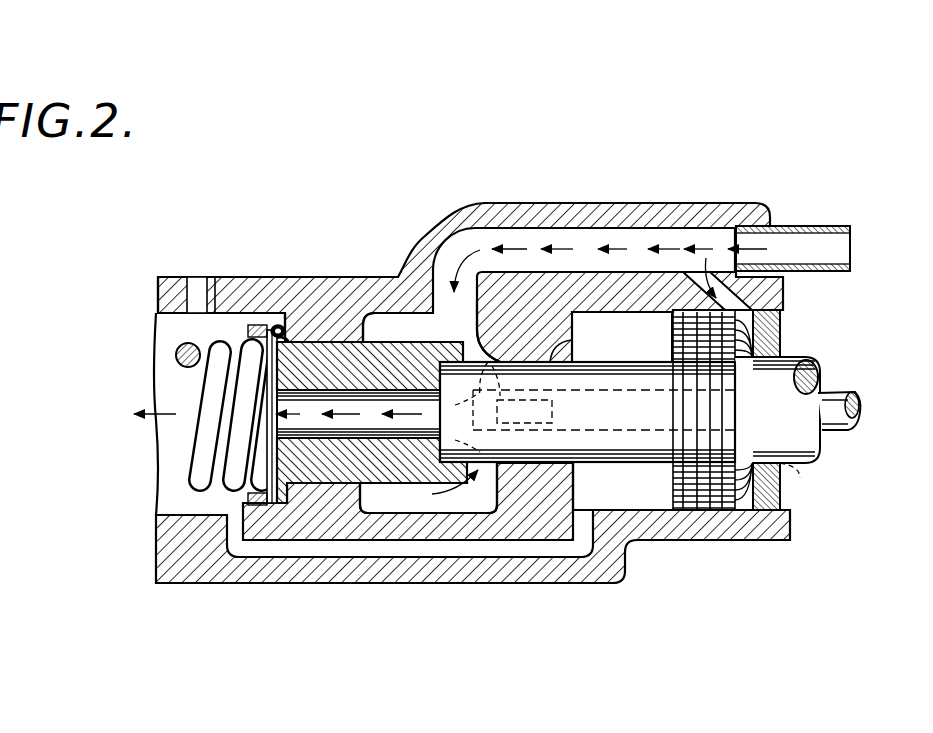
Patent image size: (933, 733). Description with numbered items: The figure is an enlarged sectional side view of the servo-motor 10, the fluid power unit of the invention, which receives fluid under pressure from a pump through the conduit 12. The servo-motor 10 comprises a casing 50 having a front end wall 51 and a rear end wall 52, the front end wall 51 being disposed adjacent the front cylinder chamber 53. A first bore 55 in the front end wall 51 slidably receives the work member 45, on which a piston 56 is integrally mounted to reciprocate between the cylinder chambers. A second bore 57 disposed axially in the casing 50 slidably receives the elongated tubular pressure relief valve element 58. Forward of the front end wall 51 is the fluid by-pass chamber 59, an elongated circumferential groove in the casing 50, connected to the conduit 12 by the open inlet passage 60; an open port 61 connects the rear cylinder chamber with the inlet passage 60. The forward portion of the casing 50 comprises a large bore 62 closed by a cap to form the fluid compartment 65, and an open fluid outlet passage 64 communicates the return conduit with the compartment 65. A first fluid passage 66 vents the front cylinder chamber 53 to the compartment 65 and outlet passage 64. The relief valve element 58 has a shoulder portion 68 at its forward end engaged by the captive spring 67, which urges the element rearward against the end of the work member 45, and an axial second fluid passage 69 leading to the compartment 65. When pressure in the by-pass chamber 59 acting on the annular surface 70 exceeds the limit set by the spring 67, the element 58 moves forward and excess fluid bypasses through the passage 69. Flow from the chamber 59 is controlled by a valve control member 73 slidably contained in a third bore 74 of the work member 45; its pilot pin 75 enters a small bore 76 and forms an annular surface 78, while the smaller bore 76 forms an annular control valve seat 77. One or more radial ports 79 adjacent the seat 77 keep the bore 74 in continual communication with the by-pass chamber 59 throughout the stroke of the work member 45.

The servo-motor 10 is at (560, 190).
The conduit 12 is at (823, 240).
The work member 45 is at (630, 372).
The casing 50 is at (270, 300).
The front end wall 51 is at (566, 326).
The rear end wall 52 is at (775, 335).
The front cylinder chamber 53 is at (645, 322).
The first bore 55 is at (568, 352).
The piston 56 is at (683, 313).
The second bore 57 is at (313, 340).
The pressure relief valve element 58 is at (343, 352).
The fluid by-pass chamber 59 is at (387, 323).
The open inlet passage 60 is at (595, 232).
The open port 61 is at (717, 277).
The large bore 62 is at (217, 290).
The open fluid outlet passage 64 is at (197, 300).
The fluid compartment 65 is at (236, 320).
The first fluid passage 66 is at (460, 550).
The captive spring 67 is at (193, 480).
The shoulder portion 68 is at (281, 328).
The second fluid passage 69 is at (363, 423).
The annular surface 70 is at (462, 340).
The valve control member 73 is at (840, 430).
The third bore 74 is at (800, 470).
The pilot pin 75 is at (588, 442).
The small bore 76 is at (428, 488).
The control valve seat 77 is at (501, 456).
The annular surface 78 is at (548, 407).
The radial port 79 is at (506, 361).